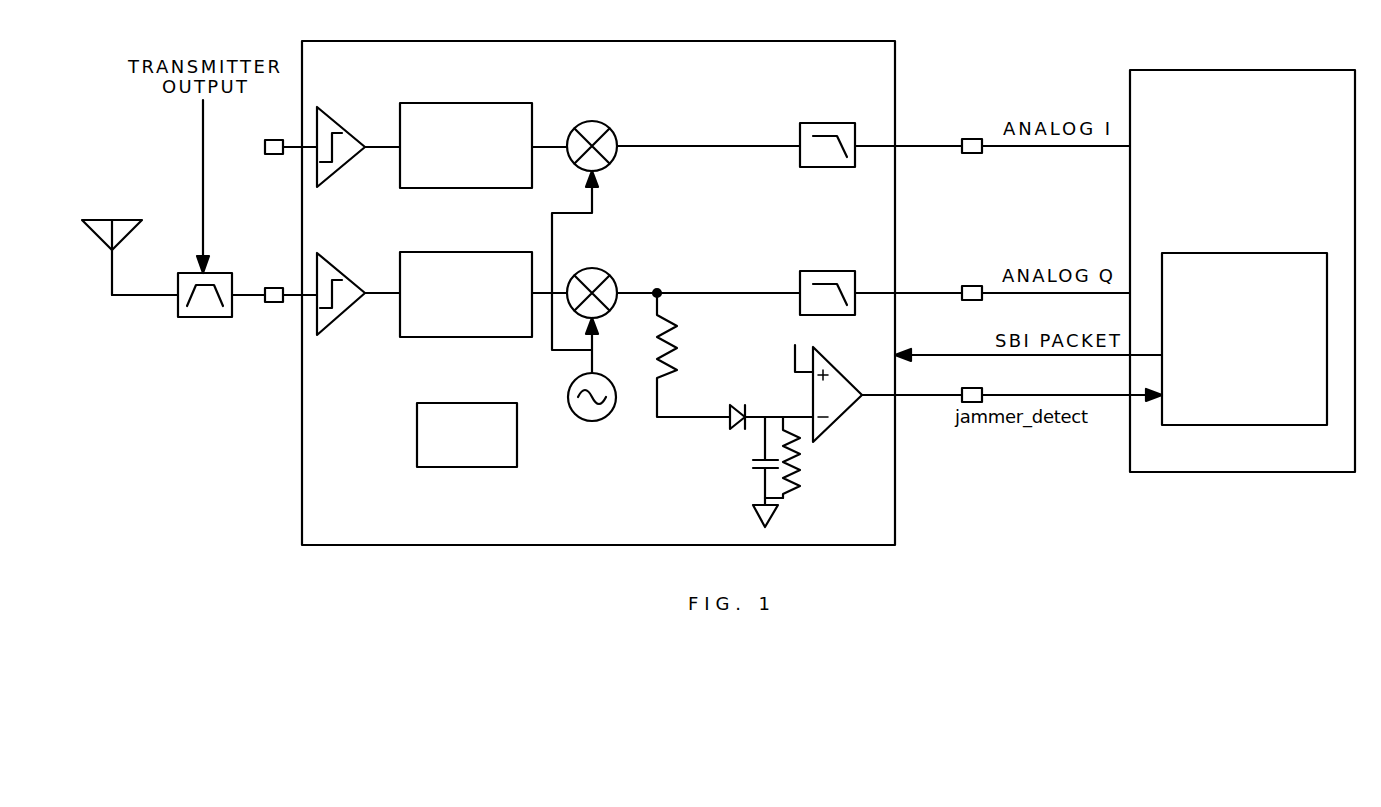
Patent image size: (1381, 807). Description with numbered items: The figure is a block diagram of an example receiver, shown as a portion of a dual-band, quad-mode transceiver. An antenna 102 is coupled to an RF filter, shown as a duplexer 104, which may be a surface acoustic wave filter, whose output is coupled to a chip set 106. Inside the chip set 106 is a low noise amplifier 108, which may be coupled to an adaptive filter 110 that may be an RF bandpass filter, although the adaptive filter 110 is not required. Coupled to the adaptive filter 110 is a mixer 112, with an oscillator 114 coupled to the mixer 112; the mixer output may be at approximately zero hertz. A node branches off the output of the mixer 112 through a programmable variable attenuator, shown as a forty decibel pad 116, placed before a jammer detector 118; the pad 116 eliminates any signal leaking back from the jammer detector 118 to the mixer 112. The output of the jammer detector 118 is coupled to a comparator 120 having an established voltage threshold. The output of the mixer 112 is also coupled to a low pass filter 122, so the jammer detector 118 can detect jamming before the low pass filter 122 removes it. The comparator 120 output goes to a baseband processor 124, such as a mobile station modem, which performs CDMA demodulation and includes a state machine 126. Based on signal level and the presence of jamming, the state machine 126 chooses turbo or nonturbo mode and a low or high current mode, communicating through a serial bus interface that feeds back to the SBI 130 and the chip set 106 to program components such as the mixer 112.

The antenna 102 is at (100, 243).
The duplexer 104 is at (220, 273).
The chip set 106 is at (592, 41).
The cell band low noise amplifier 108 is at (335, 321).
The adaptive filter 110 is at (463, 252).
The mixer 112 is at (596, 270).
The oscillator 114 is at (586, 420).
The 40 dB pad 116 is at (637, 372).
The jammer detector 118 is at (732, 419).
The comparator 120 is at (828, 428).
The low pass filter 122 is at (826, 271).
The baseband processor 124 is at (1287, 472).
The state machine 126 is at (1253, 253).
The SBI 130 is at (457, 403).